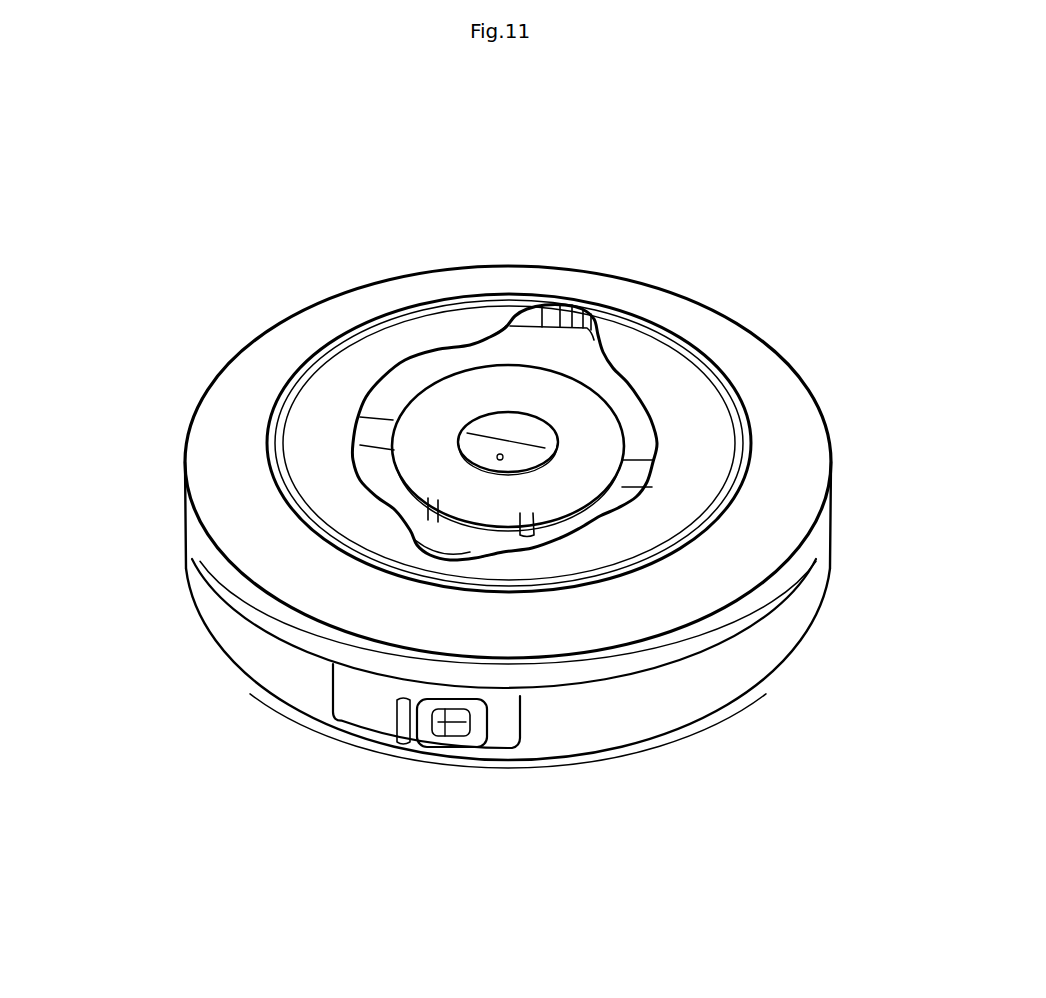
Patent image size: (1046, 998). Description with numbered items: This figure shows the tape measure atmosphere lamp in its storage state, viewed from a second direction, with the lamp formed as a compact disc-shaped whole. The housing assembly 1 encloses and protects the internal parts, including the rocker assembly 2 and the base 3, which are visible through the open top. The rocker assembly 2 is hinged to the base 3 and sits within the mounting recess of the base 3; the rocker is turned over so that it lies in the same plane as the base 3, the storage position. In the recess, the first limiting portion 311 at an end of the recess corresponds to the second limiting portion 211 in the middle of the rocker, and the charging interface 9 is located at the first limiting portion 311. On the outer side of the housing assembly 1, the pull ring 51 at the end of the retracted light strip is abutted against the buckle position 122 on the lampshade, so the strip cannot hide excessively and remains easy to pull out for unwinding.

The housing assembly 1 is at (263, 377).
The rocker assembly 2 is at (630, 412).
The base 3 is at (327, 432).
The charging interface 9 is at (500, 546).
The pull ring 51 is at (380, 697).
The buckle position 122 is at (505, 710).
The second limiting portion 211 is at (507, 330).
The first limiting portion 311 is at (560, 312).